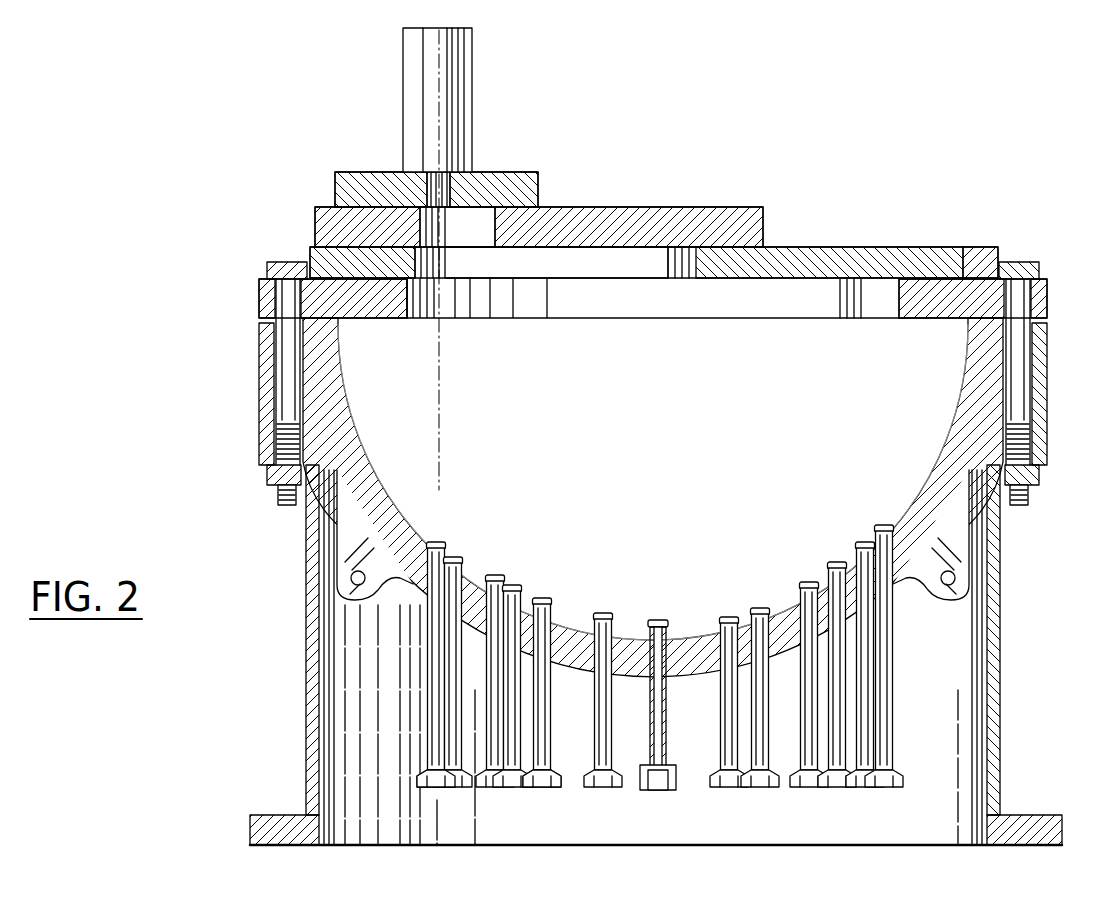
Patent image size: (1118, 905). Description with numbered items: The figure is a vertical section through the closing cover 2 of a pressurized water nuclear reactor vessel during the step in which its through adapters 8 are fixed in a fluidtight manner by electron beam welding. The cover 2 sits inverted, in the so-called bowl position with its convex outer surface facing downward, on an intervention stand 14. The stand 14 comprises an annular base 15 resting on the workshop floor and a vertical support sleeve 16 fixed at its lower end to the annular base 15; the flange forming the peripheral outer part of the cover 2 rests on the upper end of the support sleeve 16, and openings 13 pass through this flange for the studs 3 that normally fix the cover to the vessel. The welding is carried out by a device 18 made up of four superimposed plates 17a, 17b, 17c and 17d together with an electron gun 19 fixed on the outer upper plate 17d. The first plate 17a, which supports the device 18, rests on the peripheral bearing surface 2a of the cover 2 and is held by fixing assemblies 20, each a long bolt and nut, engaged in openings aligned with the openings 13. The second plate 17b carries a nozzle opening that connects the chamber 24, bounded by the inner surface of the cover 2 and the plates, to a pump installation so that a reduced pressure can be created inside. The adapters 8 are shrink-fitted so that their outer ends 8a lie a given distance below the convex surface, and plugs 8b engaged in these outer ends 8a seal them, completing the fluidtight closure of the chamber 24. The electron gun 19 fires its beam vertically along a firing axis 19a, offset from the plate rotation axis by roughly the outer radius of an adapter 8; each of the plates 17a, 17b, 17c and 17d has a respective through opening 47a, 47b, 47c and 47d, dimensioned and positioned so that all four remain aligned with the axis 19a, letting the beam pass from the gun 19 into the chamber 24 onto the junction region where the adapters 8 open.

The closing cover 2 is at (327, 510).
The peripheral bearing surface 2a is at (1007, 300).
The studs 3 is at (725, 115).
The adapters 8 is at (540, 597).
The outer end 8a is at (540, 790).
The plugs 8b is at (657, 792).
The openings 13 is at (275, 380).
The intervention stand 14 is at (641, 675).
The annular base 15 is at (275, 840).
The support sleeve 16 is at (312, 626).
The first plate 17a is at (963, 262).
The second plate 17b is at (888, 262).
The third plate 17c is at (740, 212).
The fourth plate 17d is at (520, 196).
The electron beam welding device 18 is at (660, 219).
The electron gun 19 is at (413, 108).
The firing axis 19a is at (443, 470).
The fixing assemblies 20 is at (1047, 533).
The chamber 24 is at (670, 526).
The through opening of first plate 47a is at (853, 300).
The through opening of second plate 47b is at (637, 266).
The through opening of third plate 47c is at (470, 232).
The through opening of fourth plate 47d is at (450, 168).